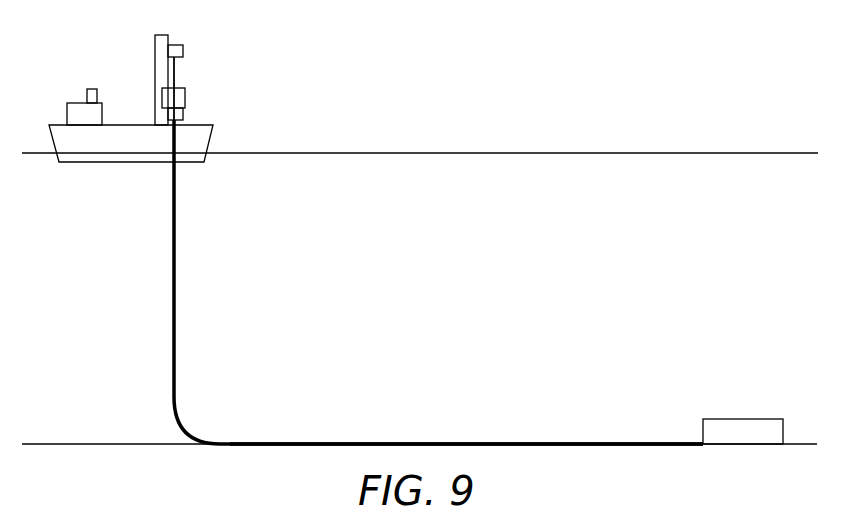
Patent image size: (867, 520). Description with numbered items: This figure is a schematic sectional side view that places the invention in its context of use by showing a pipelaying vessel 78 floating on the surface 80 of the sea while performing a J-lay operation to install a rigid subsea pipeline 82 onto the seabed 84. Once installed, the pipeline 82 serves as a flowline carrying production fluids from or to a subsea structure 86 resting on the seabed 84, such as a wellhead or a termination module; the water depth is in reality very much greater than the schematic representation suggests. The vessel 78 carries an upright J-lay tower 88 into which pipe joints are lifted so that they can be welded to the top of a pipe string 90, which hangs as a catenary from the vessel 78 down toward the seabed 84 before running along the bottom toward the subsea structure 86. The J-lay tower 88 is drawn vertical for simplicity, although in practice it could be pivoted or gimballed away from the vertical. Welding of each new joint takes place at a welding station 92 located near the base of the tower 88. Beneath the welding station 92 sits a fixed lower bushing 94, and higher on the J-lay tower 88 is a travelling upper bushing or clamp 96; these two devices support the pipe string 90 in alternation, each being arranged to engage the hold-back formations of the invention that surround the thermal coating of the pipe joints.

The pipelaying vessel 78 is at (63, 115).
The surface of the sea 80 is at (568, 152).
The rigid subsea pipeline 82 is at (452, 443).
The seabed 84 is at (78, 443).
The subsea structure 86 is at (742, 419).
The J-lay tower 88 is at (155, 48).
The pipe string 90 is at (175, 313).
The welding station 92 is at (185, 98).
The fixed lower bushing 94 is at (183, 117).
The travelling upper bushing or clamp 96 is at (183, 52).